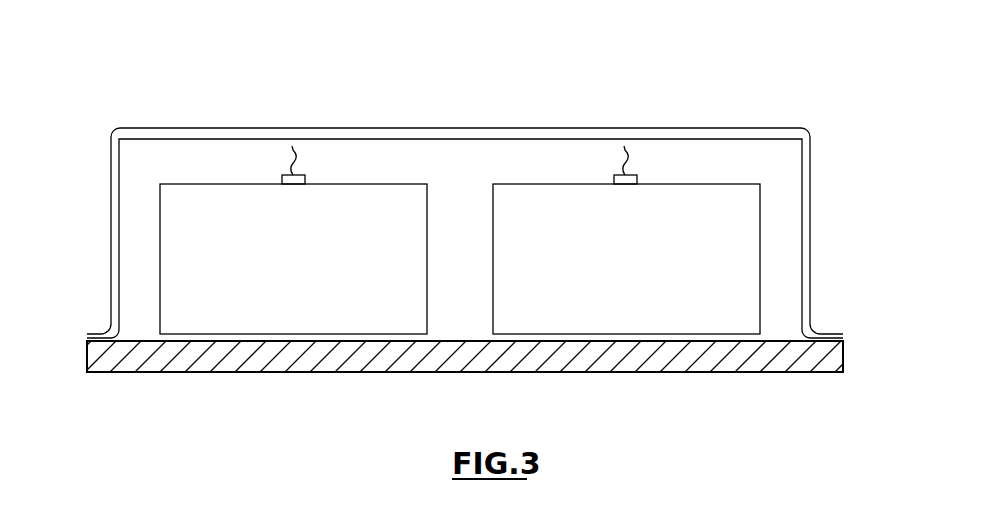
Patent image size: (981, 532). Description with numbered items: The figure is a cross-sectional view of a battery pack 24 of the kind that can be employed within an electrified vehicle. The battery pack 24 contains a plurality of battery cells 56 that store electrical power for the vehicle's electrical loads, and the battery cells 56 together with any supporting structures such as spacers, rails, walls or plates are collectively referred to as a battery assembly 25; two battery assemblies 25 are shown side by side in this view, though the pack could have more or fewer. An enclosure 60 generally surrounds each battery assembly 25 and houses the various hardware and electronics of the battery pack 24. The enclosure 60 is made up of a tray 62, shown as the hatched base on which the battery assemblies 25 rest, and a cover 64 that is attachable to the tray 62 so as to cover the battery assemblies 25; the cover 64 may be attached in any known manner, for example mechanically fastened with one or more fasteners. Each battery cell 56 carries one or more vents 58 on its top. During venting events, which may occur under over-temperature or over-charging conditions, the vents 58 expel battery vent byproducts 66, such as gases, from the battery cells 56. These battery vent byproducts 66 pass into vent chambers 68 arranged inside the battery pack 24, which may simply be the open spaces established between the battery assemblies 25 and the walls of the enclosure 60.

The battery pack 24 is at (500, 88).
The battery assembly 25 is at (150, 178).
The battery cell 56 is at (308, 268).
The vent 58 is at (292, 186).
The enclosure 60 is at (786, 125).
The tray 62 is at (446, 362).
The cover 64 is at (670, 128).
The battery vent byproducts 66 is at (298, 166).
The vent chamber 68 is at (440, 150).